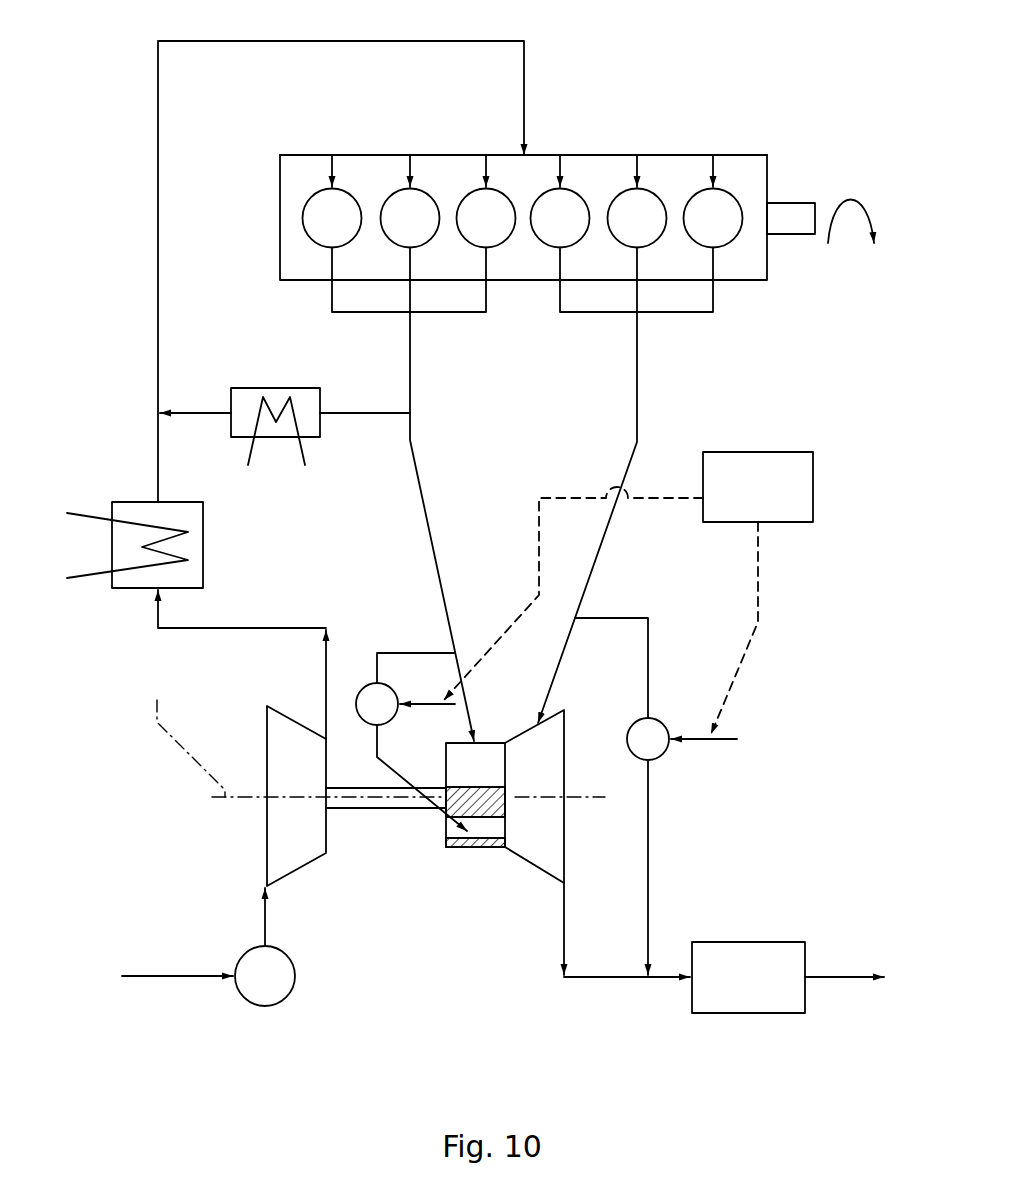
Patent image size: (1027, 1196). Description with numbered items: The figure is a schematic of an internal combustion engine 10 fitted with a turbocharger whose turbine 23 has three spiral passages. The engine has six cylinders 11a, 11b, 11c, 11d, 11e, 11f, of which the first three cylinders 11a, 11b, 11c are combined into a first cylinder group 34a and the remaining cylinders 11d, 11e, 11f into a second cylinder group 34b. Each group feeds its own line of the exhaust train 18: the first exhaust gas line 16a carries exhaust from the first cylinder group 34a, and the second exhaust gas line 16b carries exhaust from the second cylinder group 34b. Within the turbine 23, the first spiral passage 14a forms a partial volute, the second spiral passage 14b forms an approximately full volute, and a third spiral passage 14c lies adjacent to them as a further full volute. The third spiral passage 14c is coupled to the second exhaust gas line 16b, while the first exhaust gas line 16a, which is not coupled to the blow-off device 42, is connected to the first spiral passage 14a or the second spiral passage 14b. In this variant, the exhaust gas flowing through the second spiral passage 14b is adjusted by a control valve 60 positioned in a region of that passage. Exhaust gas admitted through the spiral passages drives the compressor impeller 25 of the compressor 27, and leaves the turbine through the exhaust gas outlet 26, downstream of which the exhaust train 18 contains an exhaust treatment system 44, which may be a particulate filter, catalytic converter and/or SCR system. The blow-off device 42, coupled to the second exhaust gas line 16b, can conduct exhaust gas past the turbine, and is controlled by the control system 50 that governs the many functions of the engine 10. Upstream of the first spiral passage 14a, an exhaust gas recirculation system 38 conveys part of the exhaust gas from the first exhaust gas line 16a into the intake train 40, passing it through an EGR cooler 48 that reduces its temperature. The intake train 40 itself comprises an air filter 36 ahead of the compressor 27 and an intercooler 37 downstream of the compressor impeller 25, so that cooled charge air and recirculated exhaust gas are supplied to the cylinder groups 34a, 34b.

The internal combustion engine 10 is at (752, 130).
The cylinder 11a is at (313, 233).
The cylinder 11b is at (391, 233).
The cylinder 11c is at (467, 233).
The cylinder 11d is at (541, 233).
The cylinder 11e is at (618, 233).
The cylinder 11f is at (696, 233).
The first spiral passage 14a is at (483, 768).
The second spiral passage 14b is at (483, 833).
The third spiral passage 14c is at (545, 855).
The first exhaust gas line 16a is at (440, 577).
The second exhaust gas line 16b is at (588, 583).
The exhaust train 18 is at (599, 1009).
The turbine 23 is at (462, 869).
The compressor impeller 25 is at (277, 835).
The exhaust gas outlet 26 is at (563, 984).
The compressor 27 is at (291, 886).
The first cylinder group 34a is at (383, 153).
The second cylinder group 34b is at (665, 153).
The air filter 36 is at (250, 992).
The intercooler 37 is at (190, 573).
The exhaust gas recirculation system 38 is at (281, 465).
The intake train 40 is at (218, 1013).
The blow-off device 42 is at (663, 755).
The exhaust treatment system 44 is at (733, 990).
The EGR cooler 48 is at (272, 388).
The control system 50 is at (744, 500).
The control valve 60 is at (360, 687).